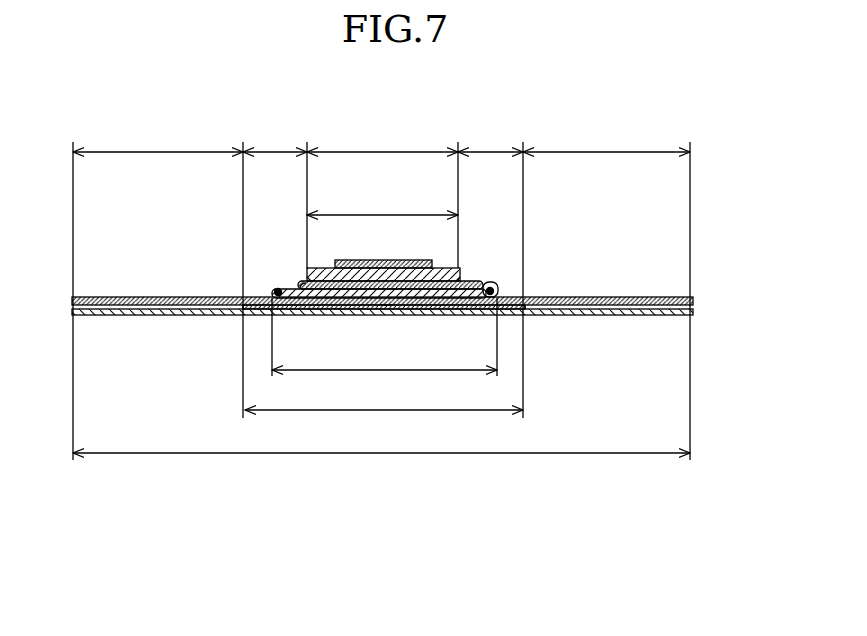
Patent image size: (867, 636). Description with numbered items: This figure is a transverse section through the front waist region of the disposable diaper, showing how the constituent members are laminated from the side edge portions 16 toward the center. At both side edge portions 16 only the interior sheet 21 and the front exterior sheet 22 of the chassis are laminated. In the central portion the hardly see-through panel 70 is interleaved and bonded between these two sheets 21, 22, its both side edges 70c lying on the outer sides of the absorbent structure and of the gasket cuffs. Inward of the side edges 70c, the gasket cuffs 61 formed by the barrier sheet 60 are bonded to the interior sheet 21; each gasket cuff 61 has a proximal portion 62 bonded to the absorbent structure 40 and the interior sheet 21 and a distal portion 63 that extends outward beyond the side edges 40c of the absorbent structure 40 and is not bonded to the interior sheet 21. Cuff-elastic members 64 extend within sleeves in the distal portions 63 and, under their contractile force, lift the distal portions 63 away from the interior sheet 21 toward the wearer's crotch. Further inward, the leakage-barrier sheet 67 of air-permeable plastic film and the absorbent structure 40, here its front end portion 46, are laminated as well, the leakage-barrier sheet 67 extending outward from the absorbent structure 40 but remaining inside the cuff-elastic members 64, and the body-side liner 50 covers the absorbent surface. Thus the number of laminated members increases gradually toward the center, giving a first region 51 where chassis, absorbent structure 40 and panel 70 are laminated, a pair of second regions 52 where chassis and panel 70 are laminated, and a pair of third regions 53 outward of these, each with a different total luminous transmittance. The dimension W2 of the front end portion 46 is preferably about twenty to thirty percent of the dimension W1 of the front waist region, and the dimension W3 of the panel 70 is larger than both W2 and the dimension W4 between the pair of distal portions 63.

The side edge portion 16 is at (387, 304).
The interior sheet 21 is at (653, 297).
The front exterior sheet 22 is at (653, 315).
The absorbent structure 40 is at (318, 228).
The front end portion 46 is at (322, 268).
The side edge 40c is at (303, 276).
The body-side liner 50 is at (386, 261).
The first region 51 is at (383, 152).
The second region 52 is at (275, 152).
The third region 53 is at (157, 152).
The barrier sheet 60 is at (323, 293).
The gasket cuff 61 is at (410, 264).
The proximal portion 62 is at (472, 282).
The distal portion 63 is at (484, 291).
The cuff-elastic member 64 is at (276, 291).
The leakage-barrier sheet 67 is at (385, 300).
The hardly see-through panel 70 is at (420, 310).
The side edge 70c is at (243, 307).
The dimension W1 is at (400, 454).
The dimension W2 is at (380, 215).
The dimension W3 is at (378, 411).
The dimension W4 is at (383, 371).